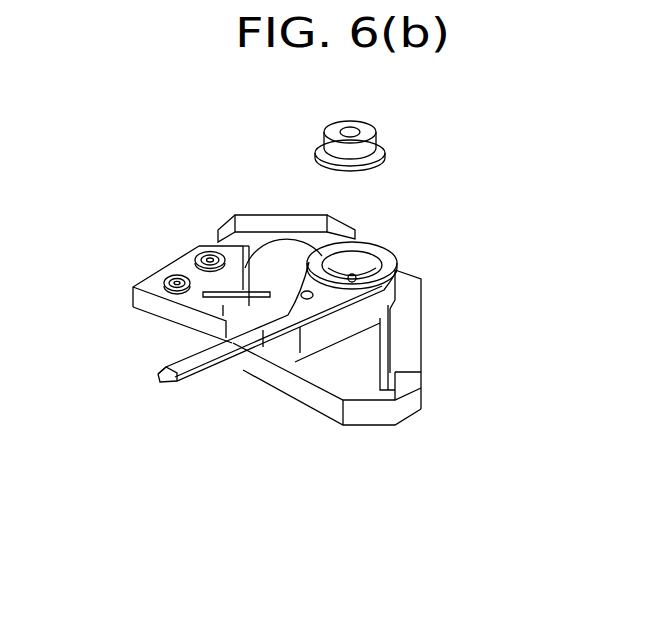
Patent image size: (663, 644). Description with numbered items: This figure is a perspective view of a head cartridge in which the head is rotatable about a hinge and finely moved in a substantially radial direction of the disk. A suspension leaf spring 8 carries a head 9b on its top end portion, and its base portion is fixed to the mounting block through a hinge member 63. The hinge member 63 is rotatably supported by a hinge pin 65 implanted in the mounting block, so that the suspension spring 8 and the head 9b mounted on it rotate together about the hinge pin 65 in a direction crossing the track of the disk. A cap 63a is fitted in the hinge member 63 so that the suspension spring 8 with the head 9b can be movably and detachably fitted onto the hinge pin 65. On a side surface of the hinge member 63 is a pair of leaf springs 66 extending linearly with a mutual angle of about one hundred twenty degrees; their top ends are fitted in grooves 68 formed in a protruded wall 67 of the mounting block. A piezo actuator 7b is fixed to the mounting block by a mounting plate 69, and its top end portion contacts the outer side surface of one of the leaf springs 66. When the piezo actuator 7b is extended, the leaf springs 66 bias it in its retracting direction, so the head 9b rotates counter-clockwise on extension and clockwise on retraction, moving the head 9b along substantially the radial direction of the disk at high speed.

The cap 63a is at (384, 152).
The mounting plate 69 is at (268, 222).
The piezo actuator 7b is at (275, 272).
The grooves 68 is at (166, 276).
The hinge pin 65 is at (356, 274).
The hinge member 63 is at (388, 298).
The leaf springs 66 is at (389, 348).
The head 9b is at (160, 384).
The suspension leaf spring 8 is at (203, 356).
The protruded wall 67 is at (316, 404).